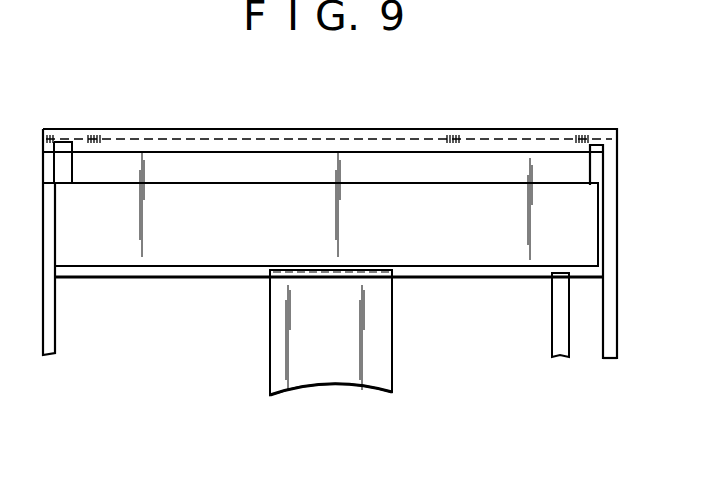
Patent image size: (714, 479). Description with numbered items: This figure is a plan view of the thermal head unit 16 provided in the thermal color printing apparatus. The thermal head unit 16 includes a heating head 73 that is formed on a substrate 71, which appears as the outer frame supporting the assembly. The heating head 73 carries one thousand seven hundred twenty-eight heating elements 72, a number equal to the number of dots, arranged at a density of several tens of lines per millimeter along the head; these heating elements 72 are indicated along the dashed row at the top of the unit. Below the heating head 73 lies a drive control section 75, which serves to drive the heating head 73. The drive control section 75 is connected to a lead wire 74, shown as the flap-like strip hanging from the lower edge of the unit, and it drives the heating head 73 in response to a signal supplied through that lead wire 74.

The thermal head unit 16 is at (255, 295).
The substrate 71 is at (599, 131).
The heating elements 72 is at (470, 135).
The heating head 73 is at (288, 166).
The lead wire 74 is at (392, 358).
The drive control section 75 is at (198, 253).